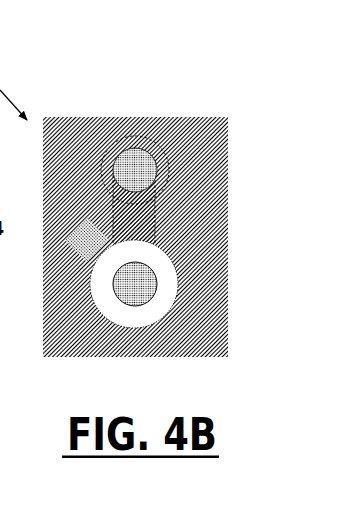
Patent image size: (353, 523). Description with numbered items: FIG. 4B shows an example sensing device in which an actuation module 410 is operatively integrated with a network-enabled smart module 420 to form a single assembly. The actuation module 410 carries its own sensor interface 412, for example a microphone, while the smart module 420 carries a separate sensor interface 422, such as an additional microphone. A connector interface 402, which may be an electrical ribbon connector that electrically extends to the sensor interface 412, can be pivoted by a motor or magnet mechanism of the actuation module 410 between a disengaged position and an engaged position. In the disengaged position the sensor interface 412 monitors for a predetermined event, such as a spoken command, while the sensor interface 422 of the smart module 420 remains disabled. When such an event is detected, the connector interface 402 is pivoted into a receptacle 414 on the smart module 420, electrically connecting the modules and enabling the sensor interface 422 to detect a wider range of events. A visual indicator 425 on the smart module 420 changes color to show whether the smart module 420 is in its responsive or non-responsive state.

The connector interface 402 is at (83, 251).
The actuation module 410 is at (170, 289).
The sensor interface 412 is at (143, 272).
The receptacle 414 is at (145, 216).
The smart module 420 is at (185, 123).
The sensor interface 422 is at (133, 177).
The visual indicator 425 is at (158, 161).